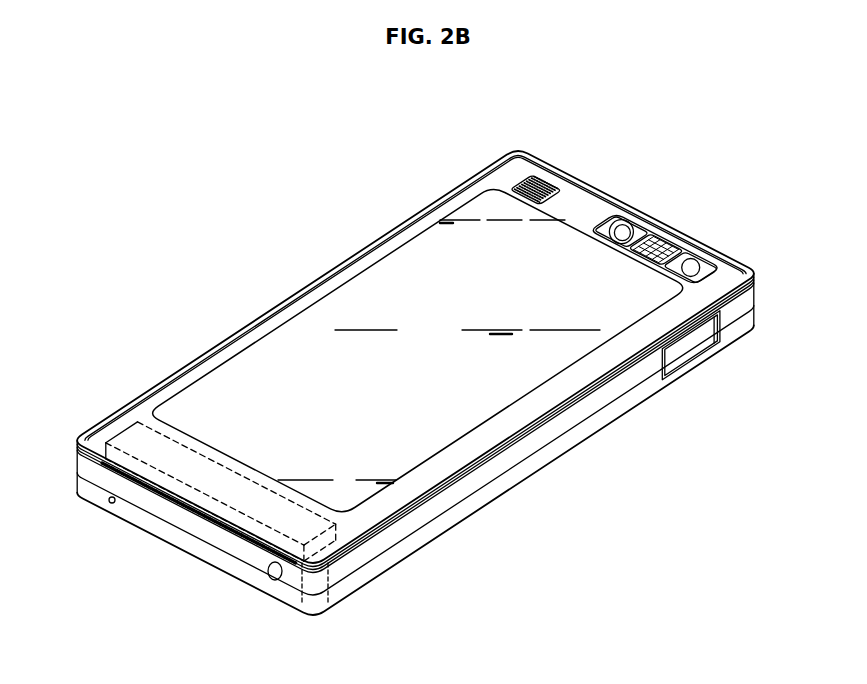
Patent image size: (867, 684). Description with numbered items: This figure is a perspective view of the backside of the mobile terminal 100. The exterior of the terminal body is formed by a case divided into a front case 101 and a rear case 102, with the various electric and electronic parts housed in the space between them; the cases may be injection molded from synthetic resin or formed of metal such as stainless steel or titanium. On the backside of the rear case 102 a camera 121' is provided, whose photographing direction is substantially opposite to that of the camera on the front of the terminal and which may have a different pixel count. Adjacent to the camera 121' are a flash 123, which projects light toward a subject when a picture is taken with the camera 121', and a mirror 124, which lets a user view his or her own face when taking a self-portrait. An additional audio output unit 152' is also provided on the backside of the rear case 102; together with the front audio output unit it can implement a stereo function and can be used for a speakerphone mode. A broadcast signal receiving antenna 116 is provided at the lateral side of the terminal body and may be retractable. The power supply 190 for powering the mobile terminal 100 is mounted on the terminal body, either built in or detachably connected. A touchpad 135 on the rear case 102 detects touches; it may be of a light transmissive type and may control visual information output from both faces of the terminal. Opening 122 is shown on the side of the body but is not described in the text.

The mobile terminal 100 is at (377, 193).
The front case 101 is at (758, 311).
The rear case 102 is at (755, 291).
The broadcast signal receiving antenna 116 is at (273, 580).
The camera 121' is at (629, 192).
The interface 122 is at (109, 502).
The flash 123 is at (660, 243).
The mirror 124 is at (692, 262).
The touchpad 135 is at (333, 312).
The additional audio output unit 152' is at (551, 155).
The power supply 190 is at (118, 430).